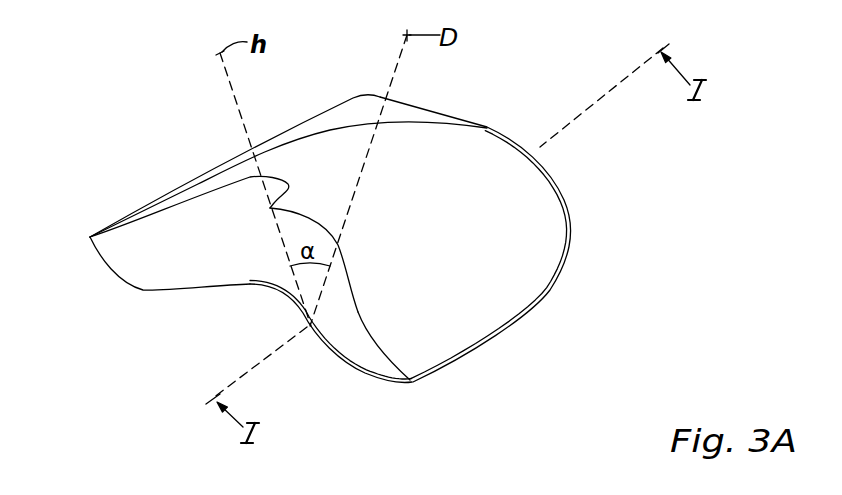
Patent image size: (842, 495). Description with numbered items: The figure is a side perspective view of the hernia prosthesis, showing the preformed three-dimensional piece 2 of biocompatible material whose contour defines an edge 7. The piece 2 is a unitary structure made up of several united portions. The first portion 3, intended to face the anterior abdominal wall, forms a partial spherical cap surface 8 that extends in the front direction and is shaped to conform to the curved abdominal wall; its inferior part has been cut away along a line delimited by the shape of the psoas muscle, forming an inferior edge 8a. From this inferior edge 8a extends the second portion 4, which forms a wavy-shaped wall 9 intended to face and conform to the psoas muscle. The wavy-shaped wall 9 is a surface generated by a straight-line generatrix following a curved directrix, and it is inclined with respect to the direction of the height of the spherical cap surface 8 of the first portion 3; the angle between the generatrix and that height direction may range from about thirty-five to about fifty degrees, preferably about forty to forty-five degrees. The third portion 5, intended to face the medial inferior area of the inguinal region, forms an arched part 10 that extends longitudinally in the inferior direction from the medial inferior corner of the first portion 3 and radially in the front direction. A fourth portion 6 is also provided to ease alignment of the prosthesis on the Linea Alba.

The piece 2 is at (500, 294).
The first portion 3 is at (522, 242).
The second portion 4 is at (342, 325).
The third portion 5 is at (148, 205).
The fourth portion 6 is at (418, 98).
The edge 7 is at (442, 384).
The partial spherical cap surface 8 is at (473, 163).
The inferior edge 8a is at (367, 323).
The wavy-shaped wall 9 is at (367, 353).
The arched part 10 is at (106, 258).